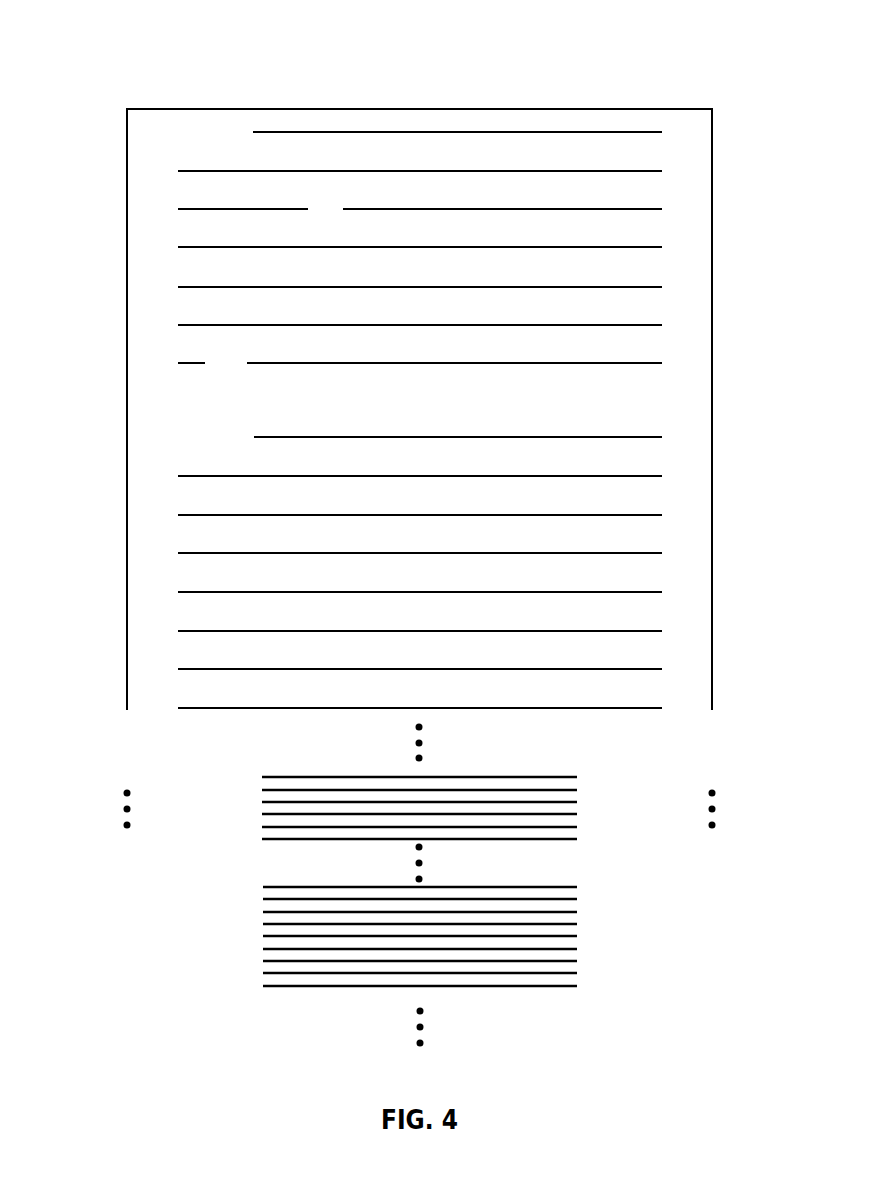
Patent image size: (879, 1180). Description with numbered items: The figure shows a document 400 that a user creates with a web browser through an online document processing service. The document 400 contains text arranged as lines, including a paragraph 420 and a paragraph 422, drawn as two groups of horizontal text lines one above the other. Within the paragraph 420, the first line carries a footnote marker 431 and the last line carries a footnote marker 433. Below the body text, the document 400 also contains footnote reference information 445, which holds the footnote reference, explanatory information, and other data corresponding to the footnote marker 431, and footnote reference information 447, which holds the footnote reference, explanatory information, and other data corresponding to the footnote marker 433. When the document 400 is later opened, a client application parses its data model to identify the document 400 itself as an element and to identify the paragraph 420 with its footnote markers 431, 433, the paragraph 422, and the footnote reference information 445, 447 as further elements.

The document 400 is at (121, 33).
The paragraph 420 is at (422, 223).
The paragraph 422 is at (733, 437).
The footnote marker 431 is at (338, 193).
The footnote marker 433 is at (212, 349).
The footnote reference information 445 is at (595, 777).
The footnote reference information 447 is at (595, 887).